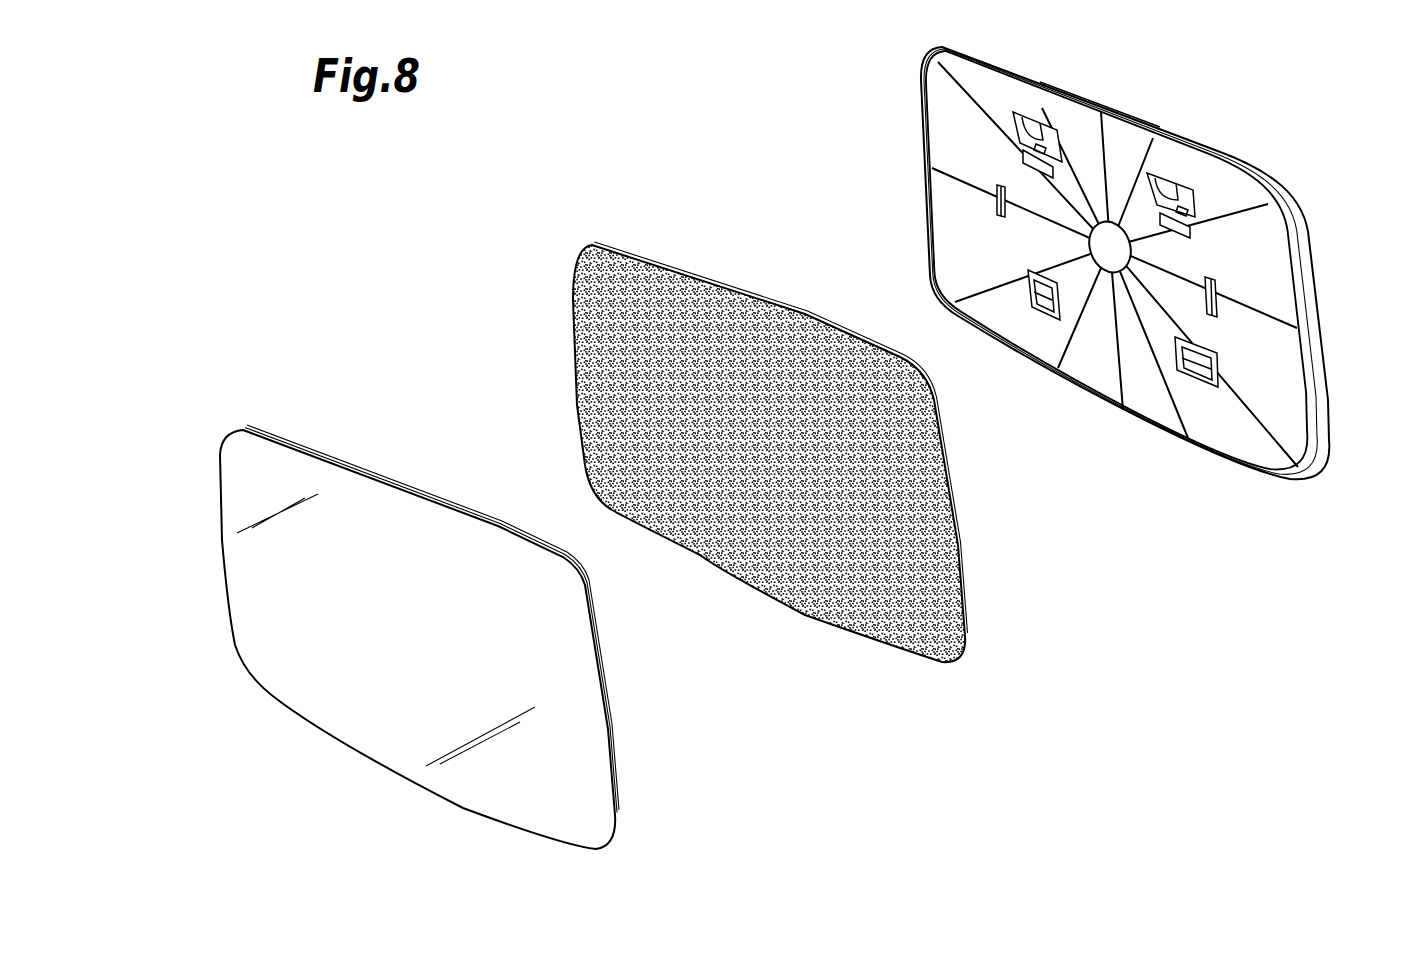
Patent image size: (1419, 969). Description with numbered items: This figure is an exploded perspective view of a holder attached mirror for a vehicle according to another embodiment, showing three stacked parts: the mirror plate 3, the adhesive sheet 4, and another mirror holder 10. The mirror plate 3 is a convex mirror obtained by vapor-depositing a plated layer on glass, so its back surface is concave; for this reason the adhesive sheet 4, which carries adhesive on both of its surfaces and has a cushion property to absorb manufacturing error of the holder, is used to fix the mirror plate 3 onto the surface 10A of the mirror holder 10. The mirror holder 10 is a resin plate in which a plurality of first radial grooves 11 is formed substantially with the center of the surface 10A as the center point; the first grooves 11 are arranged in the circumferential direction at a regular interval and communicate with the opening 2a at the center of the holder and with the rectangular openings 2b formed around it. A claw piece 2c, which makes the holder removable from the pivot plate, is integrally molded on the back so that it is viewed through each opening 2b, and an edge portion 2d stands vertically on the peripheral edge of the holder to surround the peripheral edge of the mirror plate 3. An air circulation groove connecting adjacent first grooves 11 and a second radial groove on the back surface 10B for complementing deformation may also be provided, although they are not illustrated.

The mirror plate 3 is at (200, 482).
The adhesive sheet 4 is at (550, 299).
The mirror holder 10 is at (1119, 259).
The surface 10A is at (1272, 382).
The back surface 10B is at (1318, 332).
The first grooves 11 is at (1150, 158).
The opening 2a is at (1100, 249).
The rectangular openings 2b is at (1165, 195).
The claw piece 2c is at (1047, 125).
The edge portion 2d is at (1105, 98).